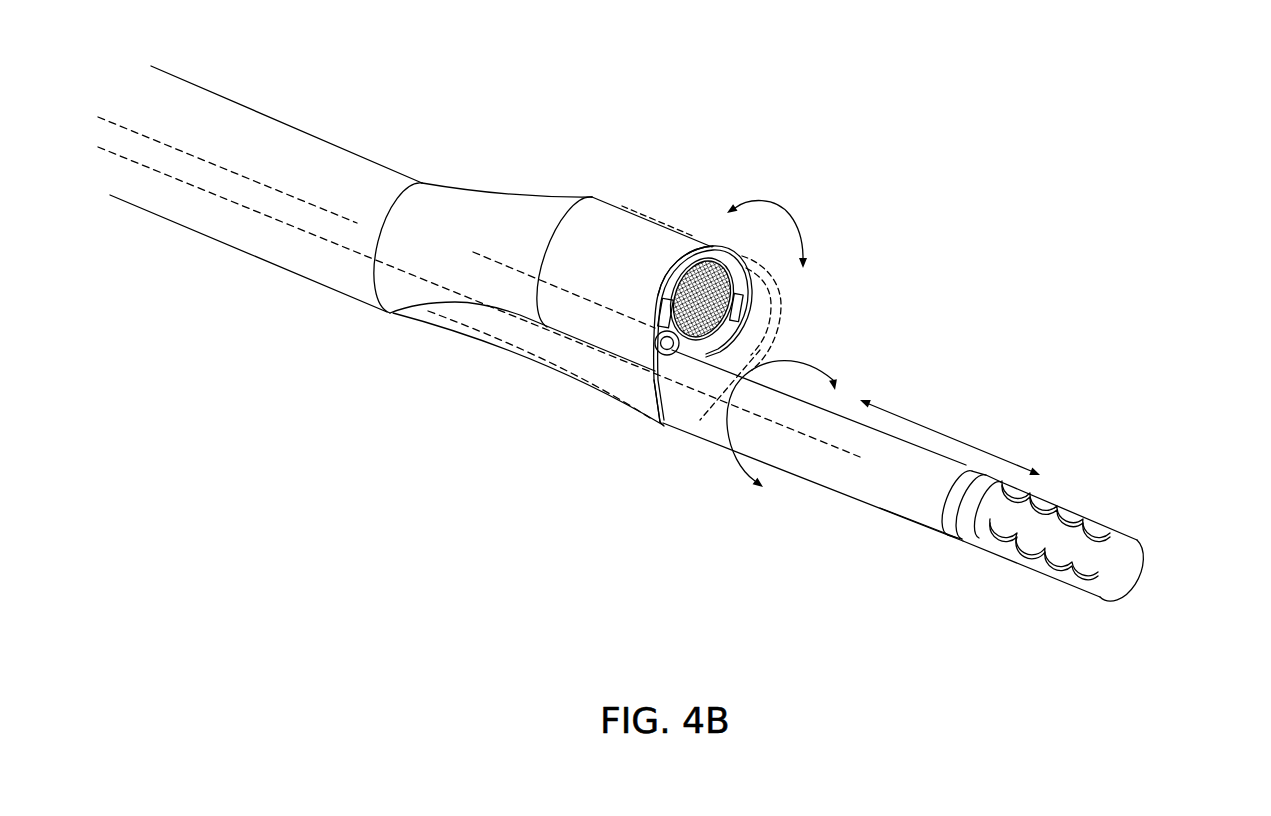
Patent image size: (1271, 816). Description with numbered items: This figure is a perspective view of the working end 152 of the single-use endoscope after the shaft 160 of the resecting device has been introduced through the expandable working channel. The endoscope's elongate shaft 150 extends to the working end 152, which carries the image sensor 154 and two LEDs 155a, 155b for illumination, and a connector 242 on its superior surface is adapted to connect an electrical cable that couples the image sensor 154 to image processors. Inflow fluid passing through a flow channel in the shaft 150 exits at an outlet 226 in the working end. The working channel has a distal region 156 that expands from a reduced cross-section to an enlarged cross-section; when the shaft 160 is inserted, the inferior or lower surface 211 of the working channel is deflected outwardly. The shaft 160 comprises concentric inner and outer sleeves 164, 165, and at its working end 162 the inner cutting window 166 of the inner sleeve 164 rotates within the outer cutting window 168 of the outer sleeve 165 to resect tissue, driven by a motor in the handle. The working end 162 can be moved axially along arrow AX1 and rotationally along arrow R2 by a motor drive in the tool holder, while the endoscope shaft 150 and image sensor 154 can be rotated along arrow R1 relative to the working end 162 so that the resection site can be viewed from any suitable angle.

The elongate shaft 150 is at (283, 122).
The working end 152 is at (709, 301).
The image sensor 154 is at (705, 260).
The LED 155a is at (674, 266).
The LED 155b is at (755, 300).
The distal region of the working channel 156 is at (560, 369).
The outlet 226 is at (653, 348).
The connector 242 is at (655, 392).
The inferior surface of the working channel 211 is at (669, 432).
The elongated shaft assembly 160 is at (837, 483).
The outer sleeve 165 is at (900, 517).
The working end 162 is at (1040, 540).
The inner sleeve 164 is at (957, 522).
The inner cutting window 166 is at (1022, 553).
The outer cutting window 168 is at (1050, 575).
The rotation arrow R1 is at (786, 229).
The rotation arrow R2 is at (833, 357).
The axial movement arrow AX1 is at (965, 443).